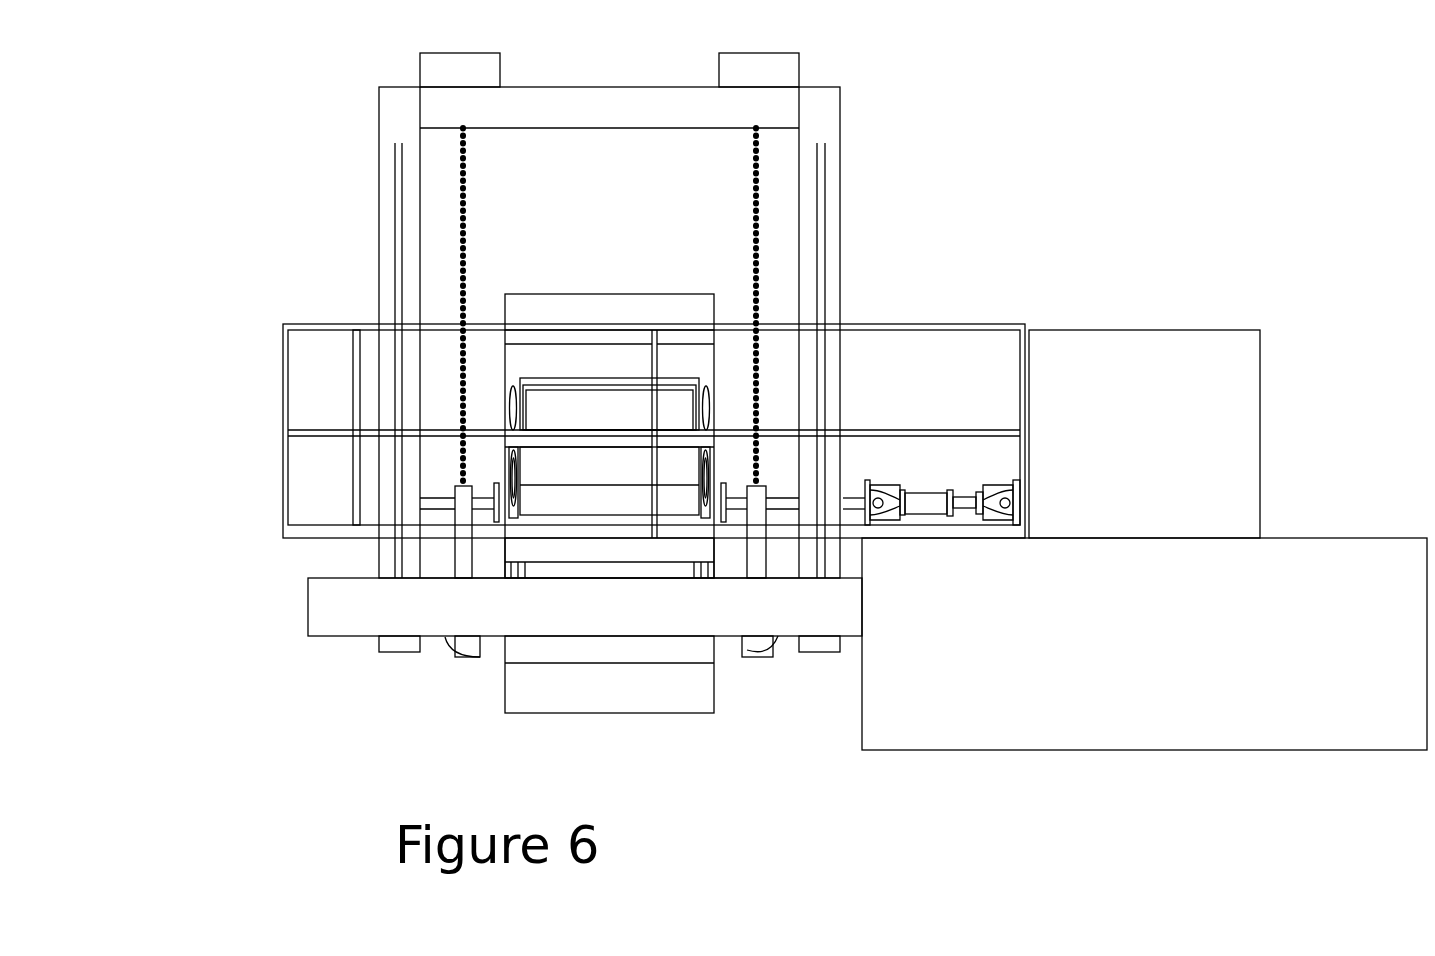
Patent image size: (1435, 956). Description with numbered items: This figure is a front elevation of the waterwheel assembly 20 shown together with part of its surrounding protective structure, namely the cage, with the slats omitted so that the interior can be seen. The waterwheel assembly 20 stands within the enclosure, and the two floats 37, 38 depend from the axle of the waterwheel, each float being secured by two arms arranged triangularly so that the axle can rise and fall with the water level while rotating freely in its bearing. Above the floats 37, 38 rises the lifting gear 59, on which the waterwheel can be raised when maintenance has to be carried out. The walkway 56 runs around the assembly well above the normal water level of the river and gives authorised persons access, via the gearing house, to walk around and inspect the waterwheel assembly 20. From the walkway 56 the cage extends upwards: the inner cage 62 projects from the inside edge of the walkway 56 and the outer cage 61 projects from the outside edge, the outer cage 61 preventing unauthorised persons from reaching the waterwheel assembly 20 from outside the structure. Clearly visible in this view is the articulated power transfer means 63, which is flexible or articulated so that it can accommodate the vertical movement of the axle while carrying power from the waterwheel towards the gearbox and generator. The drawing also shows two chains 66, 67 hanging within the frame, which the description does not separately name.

The waterwheel assembly 20 is at (864, 206).
The lifting gear 59 is at (435, 63).
The first lift chain 66 is at (463, 237).
The second lift chain 67 is at (756, 243).
The outer cage 61 is at (285, 398).
The inner cage 62 is at (353, 363).
The walkway 56 is at (317, 533).
The power transfer means 63 is at (925, 507).
The float 37 is at (465, 650).
The float 38 is at (747, 646).